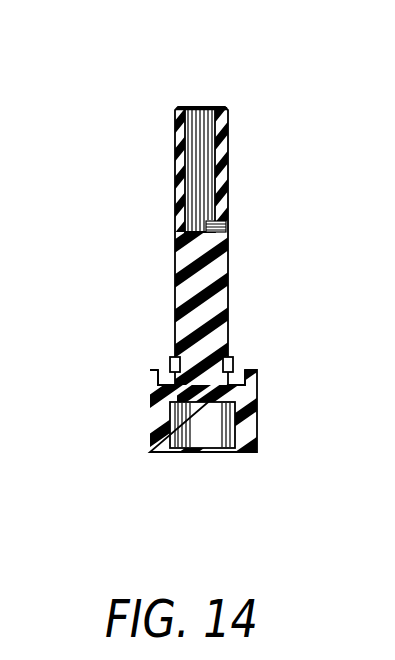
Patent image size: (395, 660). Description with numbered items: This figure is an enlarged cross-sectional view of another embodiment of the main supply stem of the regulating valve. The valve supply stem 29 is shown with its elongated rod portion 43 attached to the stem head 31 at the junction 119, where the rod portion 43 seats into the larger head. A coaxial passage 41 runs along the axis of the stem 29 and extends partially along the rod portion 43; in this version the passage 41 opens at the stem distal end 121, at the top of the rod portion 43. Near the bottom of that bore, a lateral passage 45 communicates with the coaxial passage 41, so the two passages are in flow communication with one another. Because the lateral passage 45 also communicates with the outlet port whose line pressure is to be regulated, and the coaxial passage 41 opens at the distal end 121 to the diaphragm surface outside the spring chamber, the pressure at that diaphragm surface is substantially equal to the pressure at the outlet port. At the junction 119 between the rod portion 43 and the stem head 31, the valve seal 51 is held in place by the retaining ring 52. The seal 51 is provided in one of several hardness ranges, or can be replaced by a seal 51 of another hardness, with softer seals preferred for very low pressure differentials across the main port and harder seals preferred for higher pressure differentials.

The coaxial passage 41 is at (198, 108).
The stem distal end 121 is at (222, 110).
The lateral passage 45 is at (227, 228).
The valve supply stem 29 is at (227, 275).
The rod portion 43 is at (187, 308).
The junction 119 is at (147, 360).
The retaining ring 52 is at (233, 366).
The valve seal 51 is at (243, 370).
The stem head 31 is at (257, 418).